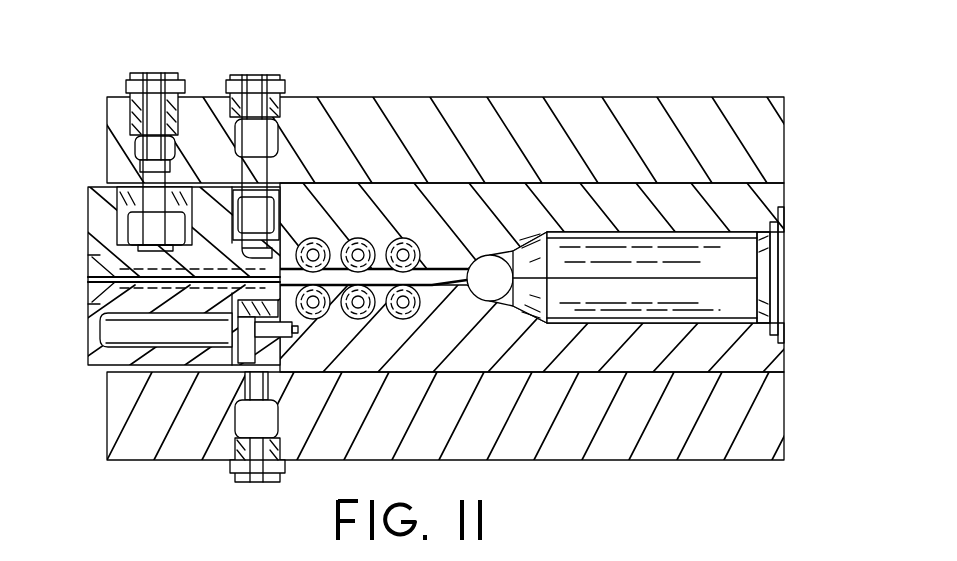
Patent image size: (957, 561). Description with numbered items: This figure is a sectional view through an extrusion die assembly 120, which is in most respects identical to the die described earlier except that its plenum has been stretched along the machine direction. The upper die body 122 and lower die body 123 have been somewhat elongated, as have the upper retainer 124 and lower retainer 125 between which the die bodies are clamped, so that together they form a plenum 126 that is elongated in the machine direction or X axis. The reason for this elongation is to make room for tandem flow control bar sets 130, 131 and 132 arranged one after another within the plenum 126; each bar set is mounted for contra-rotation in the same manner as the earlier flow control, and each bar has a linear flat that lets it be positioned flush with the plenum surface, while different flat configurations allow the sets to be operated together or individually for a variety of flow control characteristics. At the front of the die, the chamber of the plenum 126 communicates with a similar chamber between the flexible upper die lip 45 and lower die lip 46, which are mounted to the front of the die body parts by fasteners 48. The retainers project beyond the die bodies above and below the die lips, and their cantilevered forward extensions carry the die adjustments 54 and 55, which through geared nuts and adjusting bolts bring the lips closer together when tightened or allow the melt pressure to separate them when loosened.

The upper die lip 45 is at (88, 247).
The lower die lip 46 is at (88, 338).
The fasteners 48 is at (282, 340).
The die adjustment 54 is at (136, 76).
The die adjustment 55 is at (265, 79).
The die assembly 120 is at (423, 268).
The upper die body 122 is at (740, 203).
The lower die body 123 is at (745, 356).
The upper retainer 124 is at (722, 125).
The lower retainer 125 is at (730, 425).
The plenum 126 is at (432, 277).
The flow control bar set 130 is at (315, 238).
The flow control bar set 131 is at (358, 238).
The flow control bar set 132 is at (405, 238).